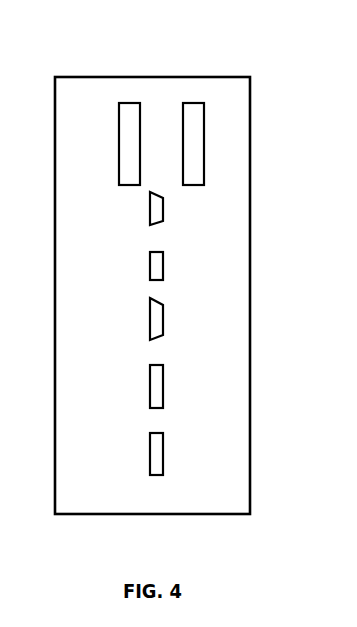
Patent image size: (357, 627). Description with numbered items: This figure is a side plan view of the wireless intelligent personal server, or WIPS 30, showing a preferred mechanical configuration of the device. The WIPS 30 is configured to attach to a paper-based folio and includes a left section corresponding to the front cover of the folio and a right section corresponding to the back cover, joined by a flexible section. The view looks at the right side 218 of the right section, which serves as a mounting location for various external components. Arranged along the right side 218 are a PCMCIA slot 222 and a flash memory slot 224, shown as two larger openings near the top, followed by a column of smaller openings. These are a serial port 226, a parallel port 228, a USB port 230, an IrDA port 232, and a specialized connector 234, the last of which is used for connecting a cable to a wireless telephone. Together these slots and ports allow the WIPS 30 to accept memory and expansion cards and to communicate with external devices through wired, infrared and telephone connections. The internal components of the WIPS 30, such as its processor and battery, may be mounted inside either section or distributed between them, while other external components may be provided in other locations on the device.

The wireless intelligent personal server 30 is at (208, 56).
The right side 218 is at (251, 205).
The PCMCIA slot 222 is at (118, 123).
The flash memory slot 224 is at (183, 123).
The serial port 226 is at (164, 212).
The parallel port 228 is at (164, 267).
The USB port 230 is at (164, 320).
The IrDA port 232 is at (164, 385).
The specialized connector 234 is at (164, 453).